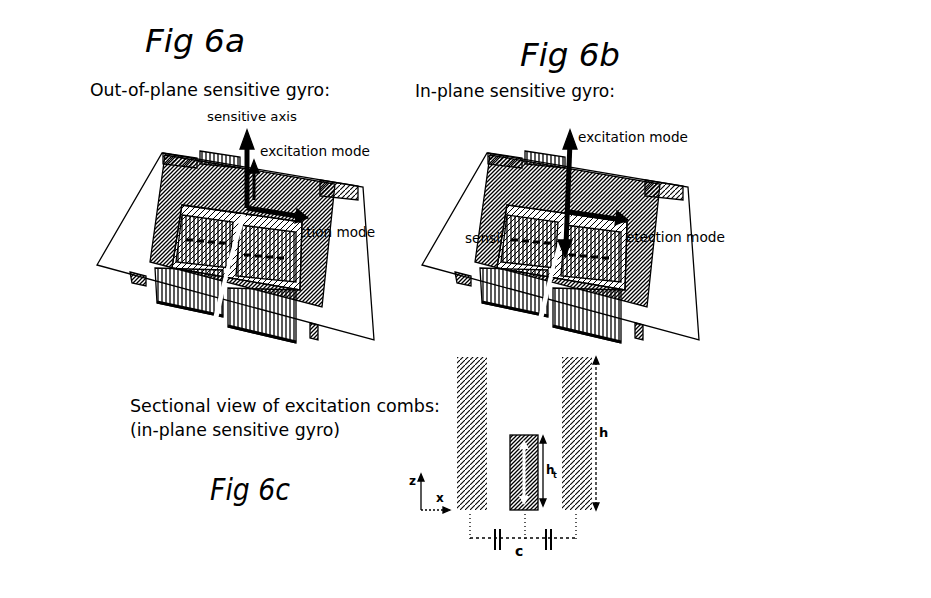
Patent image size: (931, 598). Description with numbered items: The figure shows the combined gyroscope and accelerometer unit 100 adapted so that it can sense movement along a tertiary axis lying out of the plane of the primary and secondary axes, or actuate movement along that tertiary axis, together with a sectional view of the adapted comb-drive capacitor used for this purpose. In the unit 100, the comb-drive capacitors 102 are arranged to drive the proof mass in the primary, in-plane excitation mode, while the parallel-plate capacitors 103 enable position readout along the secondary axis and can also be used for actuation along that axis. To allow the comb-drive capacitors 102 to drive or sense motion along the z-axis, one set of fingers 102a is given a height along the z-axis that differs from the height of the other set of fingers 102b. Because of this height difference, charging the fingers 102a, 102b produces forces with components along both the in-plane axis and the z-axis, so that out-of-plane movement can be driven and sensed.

In FIG. 6a, the combined gyroscope and accelerometer unit 100 is at (85, 205).
In FIG. 6b, the combined gyroscope and accelerometer unit 100 is at (790, 218).
In FIG. 6a, the comb-drive capacitors 102 is at (217, 153).
In FIG. 6b, the comb-drive capacitors 102 is at (580, 153).
In FIG. 6c, the set of fingers 102a is at (563, 383).
In FIG. 6c, the other set of fingers 102b is at (526, 432).
In FIG. 6a, the parallel-plate capacitors 103 is at (240, 233).
In FIG. 6b, the parallel-plate capacitors 103 is at (617, 262).